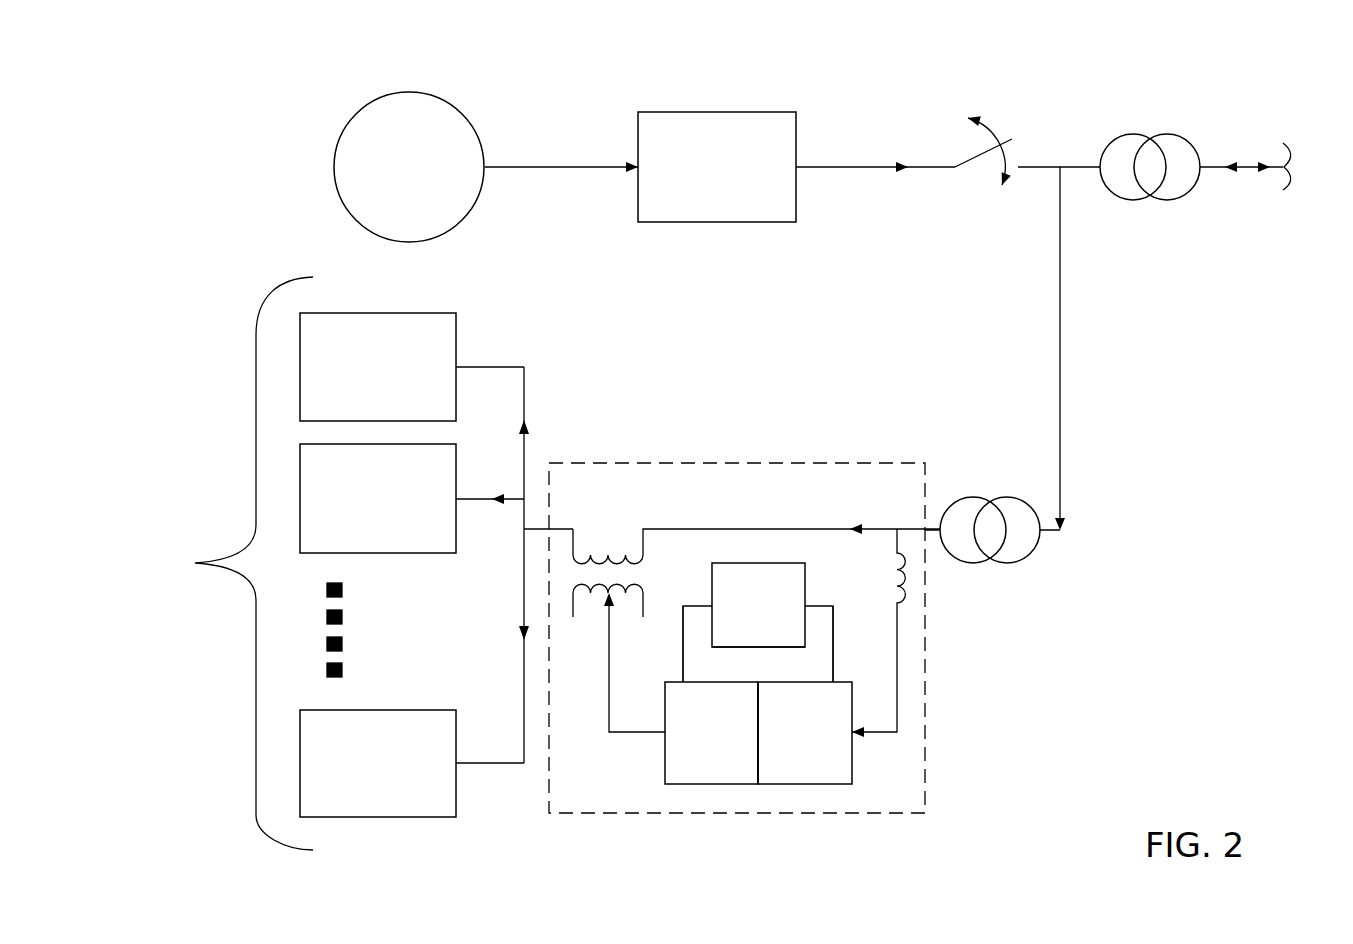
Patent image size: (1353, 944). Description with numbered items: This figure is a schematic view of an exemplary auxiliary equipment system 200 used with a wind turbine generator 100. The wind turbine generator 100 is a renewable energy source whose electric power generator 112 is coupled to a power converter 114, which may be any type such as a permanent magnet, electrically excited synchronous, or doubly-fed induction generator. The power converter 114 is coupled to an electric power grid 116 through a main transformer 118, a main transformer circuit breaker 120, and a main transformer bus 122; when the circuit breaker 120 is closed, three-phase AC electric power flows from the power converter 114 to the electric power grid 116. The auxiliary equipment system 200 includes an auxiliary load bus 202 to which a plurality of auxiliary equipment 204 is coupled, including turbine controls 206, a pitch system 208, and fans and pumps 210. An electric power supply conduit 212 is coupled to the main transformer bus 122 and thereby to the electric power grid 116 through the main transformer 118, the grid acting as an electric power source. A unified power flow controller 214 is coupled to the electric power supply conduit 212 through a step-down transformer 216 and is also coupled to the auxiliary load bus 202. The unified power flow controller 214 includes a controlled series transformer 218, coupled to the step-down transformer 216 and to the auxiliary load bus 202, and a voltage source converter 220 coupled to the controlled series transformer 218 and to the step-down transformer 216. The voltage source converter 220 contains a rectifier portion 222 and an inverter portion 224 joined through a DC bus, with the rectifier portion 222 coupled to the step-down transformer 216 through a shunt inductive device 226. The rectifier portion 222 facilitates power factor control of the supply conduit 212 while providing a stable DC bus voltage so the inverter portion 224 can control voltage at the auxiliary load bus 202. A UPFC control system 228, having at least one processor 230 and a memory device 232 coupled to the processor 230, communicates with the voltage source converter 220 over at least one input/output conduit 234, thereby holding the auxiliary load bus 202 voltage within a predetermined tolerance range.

The wind turbine generator 100 is at (356, 68).
The electric power generator 112 is at (447, 101).
The power converter 114 is at (686, 112).
The electric power grid 116 is at (1320, 229).
The main transformer 118 is at (1167, 134).
The main transformer circuit breaker 120 is at (1003, 111).
The main transformer bus 122 is at (1043, 163).
The auxiliary equipment system 200 is at (480, 300).
The auxiliary load bus 202 is at (524, 590).
The auxiliary equipment 204 is at (253, 467).
The turbine controls 206 is at (392, 391).
The pitch system 208 is at (382, 513).
The fans and pumps 210 is at (356, 771).
The electric power supply conduit 212 is at (1061, 388).
The unified power flow controller 214 is at (678, 460).
The step-down transformer 216 is at (1036, 552).
The controlled series transformer 218 is at (619, 542).
The voltage source converter 220 is at (767, 803).
The rectifier portion 222 is at (827, 768).
The inverter portion 224 is at (697, 768).
The shunt inductive device 226 is at (907, 597).
The UPFC control system 228 is at (766, 545).
The processor 230 is at (760, 598).
The memory device 232 is at (752, 631).
The input/output conduit 234 is at (683, 620).